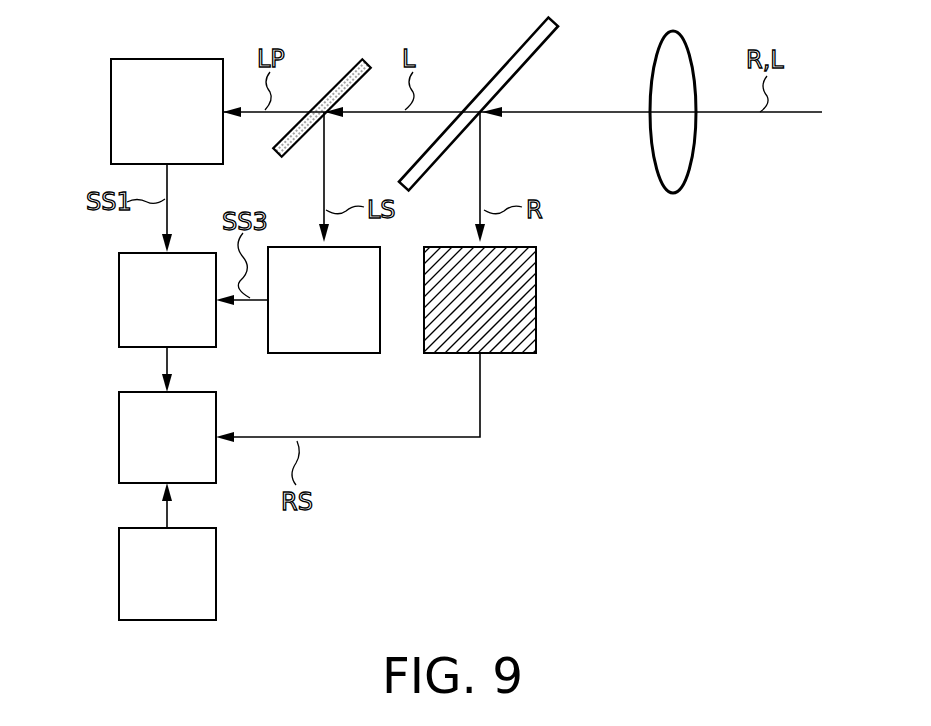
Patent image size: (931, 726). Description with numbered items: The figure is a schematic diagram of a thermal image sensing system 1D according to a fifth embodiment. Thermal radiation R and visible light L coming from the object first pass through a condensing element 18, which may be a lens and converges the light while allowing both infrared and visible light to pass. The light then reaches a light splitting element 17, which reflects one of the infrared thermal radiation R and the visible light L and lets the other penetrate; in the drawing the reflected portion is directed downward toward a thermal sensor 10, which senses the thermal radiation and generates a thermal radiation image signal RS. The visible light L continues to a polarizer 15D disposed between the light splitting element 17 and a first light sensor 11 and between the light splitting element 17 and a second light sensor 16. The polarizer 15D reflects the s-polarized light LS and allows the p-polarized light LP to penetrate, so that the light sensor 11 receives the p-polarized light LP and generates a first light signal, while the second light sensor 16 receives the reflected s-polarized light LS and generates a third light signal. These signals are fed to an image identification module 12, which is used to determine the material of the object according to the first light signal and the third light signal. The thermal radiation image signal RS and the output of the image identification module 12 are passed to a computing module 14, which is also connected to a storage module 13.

The light sensor 11 is at (111, 110).
The polarizer 15D is at (348, 68).
The light splitting element 17 is at (508, 72).
The condensing element 18 is at (685, 155).
The image identification module 12 is at (182, 313).
The second light sensor 16 is at (366, 345).
The thermal sensor 10 is at (522, 345).
The computing module 14 is at (182, 449).
The storage module 13 is at (182, 585).
The thermal image sensing system 1D is at (779, 580).